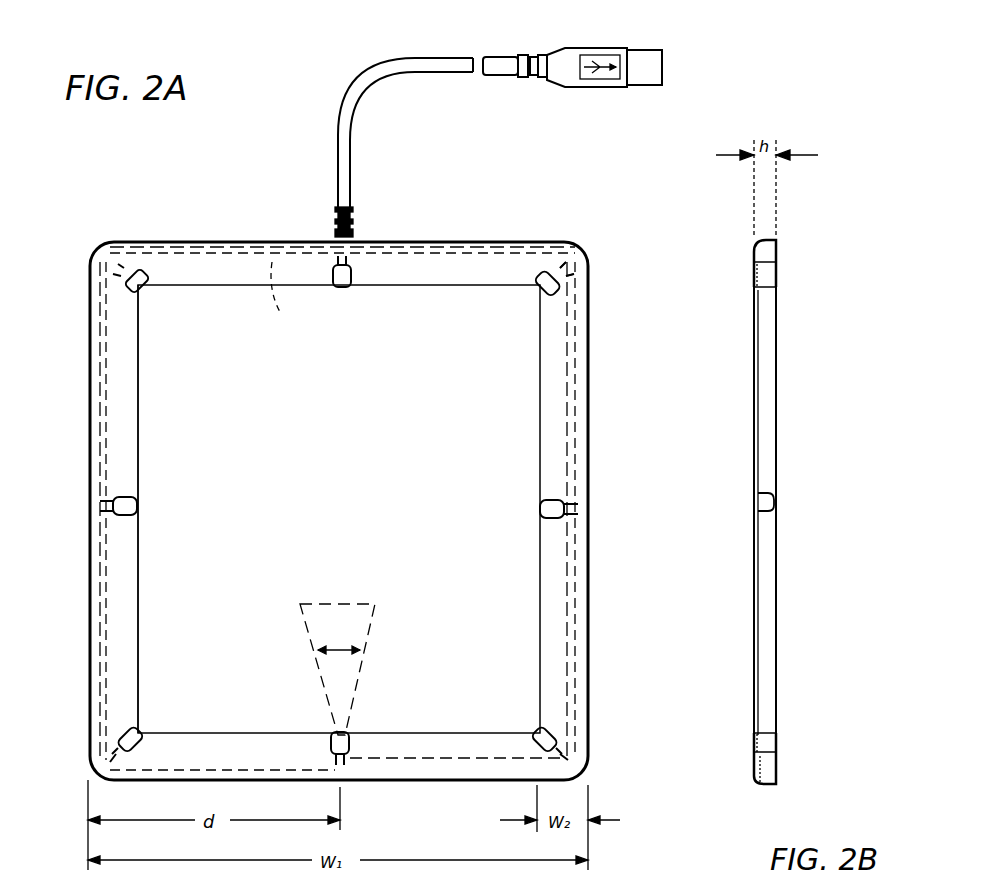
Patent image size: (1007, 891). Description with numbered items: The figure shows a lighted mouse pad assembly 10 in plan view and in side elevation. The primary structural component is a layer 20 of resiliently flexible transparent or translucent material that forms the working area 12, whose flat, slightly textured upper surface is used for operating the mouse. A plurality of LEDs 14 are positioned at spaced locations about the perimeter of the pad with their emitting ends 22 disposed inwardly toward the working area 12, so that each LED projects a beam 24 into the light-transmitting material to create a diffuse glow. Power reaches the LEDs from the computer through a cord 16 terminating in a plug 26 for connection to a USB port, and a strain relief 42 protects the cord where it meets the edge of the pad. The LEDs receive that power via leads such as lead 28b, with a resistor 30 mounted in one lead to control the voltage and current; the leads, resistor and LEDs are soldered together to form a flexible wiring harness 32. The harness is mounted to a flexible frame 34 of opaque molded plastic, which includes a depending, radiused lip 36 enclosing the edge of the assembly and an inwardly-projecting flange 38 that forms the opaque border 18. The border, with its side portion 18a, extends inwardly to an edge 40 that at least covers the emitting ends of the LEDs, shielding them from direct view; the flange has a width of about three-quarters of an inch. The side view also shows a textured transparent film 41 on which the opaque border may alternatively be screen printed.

In FIG. 2A, the lighted mouse pad assembly 10 is at (100, 196).
In FIG. 2A, the working area 12 is at (349, 440).
In FIG. 2B, the working area 12 is at (750, 598).
In FIG. 2A, the LEDs 14 is at (128, 297).
In FIG. 2B, the LEDs 14 is at (755, 504).
In FIG. 2A, the power cable 16 is at (345, 97).
In FIG. 2A, the opaque border 18 is at (190, 268).
In FIG. 2A, the edge strip side portion 18a is at (100, 383).
In FIG. 2B, the layer of transparent or translucent material 20 is at (770, 390).
In FIG. 2A, the emitting ends 22 is at (137, 507).
In FIG. 2A, the beam 24 is at (300, 639).
In FIG. 2A, the plug 26 is at (605, 48).
In FIG. 2A, the lead 28b is at (106, 335).
In FIG. 2A, the resistor 30 is at (286, 298).
In FIG. 2A, the flexible wiring harness 32 is at (560, 385).
In FIG. 2A, the flexible frame 34 is at (88, 614).
In FIG. 2B, the radiused lip 36 is at (760, 786).
In FIG. 2B, the inwardly-projecting flange 38 is at (754, 736).
In FIG. 2A, the edge 40 is at (140, 607).
In FIG. 2B, the film 41 is at (748, 430).
In FIG. 2A, the strain relief 42 is at (352, 225).